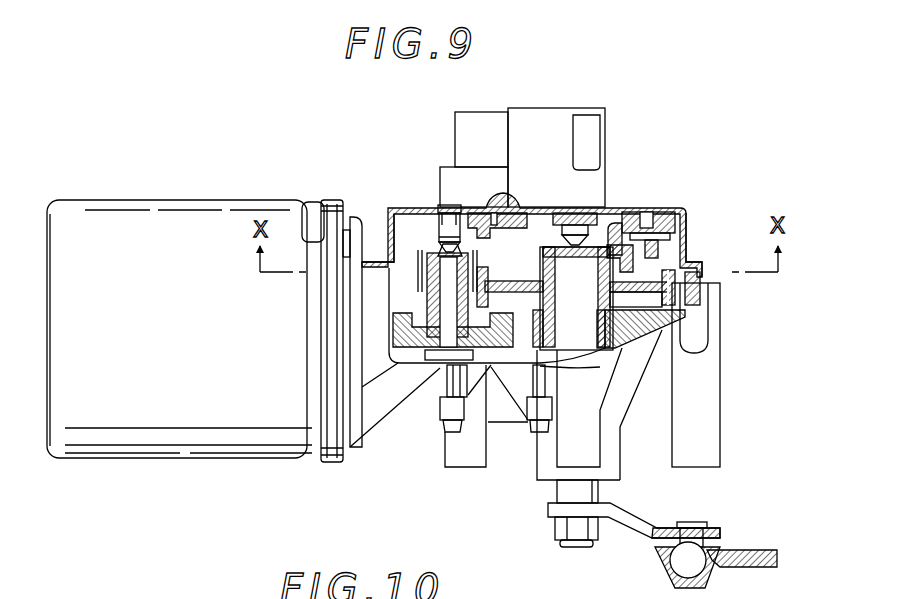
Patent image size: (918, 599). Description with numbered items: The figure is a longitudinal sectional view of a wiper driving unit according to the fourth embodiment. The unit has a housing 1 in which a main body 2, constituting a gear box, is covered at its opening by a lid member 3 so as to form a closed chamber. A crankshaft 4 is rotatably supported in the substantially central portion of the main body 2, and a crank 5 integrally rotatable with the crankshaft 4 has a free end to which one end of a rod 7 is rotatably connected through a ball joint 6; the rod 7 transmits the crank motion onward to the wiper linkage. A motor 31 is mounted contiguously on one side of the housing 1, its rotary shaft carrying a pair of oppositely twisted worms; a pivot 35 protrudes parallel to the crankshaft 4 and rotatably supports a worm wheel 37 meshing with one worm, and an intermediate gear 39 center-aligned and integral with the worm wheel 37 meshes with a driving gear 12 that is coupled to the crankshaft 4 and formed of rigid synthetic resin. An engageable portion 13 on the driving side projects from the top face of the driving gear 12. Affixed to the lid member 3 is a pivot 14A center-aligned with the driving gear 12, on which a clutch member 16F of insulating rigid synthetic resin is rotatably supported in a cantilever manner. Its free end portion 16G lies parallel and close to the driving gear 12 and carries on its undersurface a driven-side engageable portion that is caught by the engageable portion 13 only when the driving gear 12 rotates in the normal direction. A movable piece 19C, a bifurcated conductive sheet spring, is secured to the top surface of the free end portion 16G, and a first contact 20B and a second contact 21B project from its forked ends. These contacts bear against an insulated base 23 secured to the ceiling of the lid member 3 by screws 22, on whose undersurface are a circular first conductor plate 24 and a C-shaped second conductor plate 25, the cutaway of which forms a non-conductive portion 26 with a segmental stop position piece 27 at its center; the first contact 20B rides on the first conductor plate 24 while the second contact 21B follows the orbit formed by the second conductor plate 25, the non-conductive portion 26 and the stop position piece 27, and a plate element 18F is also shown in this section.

The housing 1 is at (402, 206).
The main body 2 is at (382, 410).
The lid member 3 is at (418, 210).
The crankshaft 4 is at (563, 492).
The crank 5 is at (633, 517).
The ball joint 6 is at (657, 570).
The rod 7 is at (763, 550).
The driving gear 12 is at (705, 318).
The engageable portion on the driving side 13 is at (633, 312).
The pivot 14A is at (572, 207).
The clutch member 16F is at (617, 204).
The free end portion 16G is at (690, 258).
The base plate 18F is at (690, 298).
The movable piece 19C is at (687, 242).
The first contact 20B is at (632, 201).
The second contact 21B is at (687, 210).
The screws 22 is at (500, 199).
The insulated base 23 is at (695, 212).
The first conductor plate 24 is at (527, 205).
The second conductor plate 25 is at (670, 207).
The non-conductive portion 26 is at (478, 203).
The stop position piece 27 is at (483, 200).
The motor 31 is at (190, 218).
The pivot 35 is at (421, 345).
The worm wheel 37 is at (392, 322).
The intermediate gear 39 is at (395, 203).